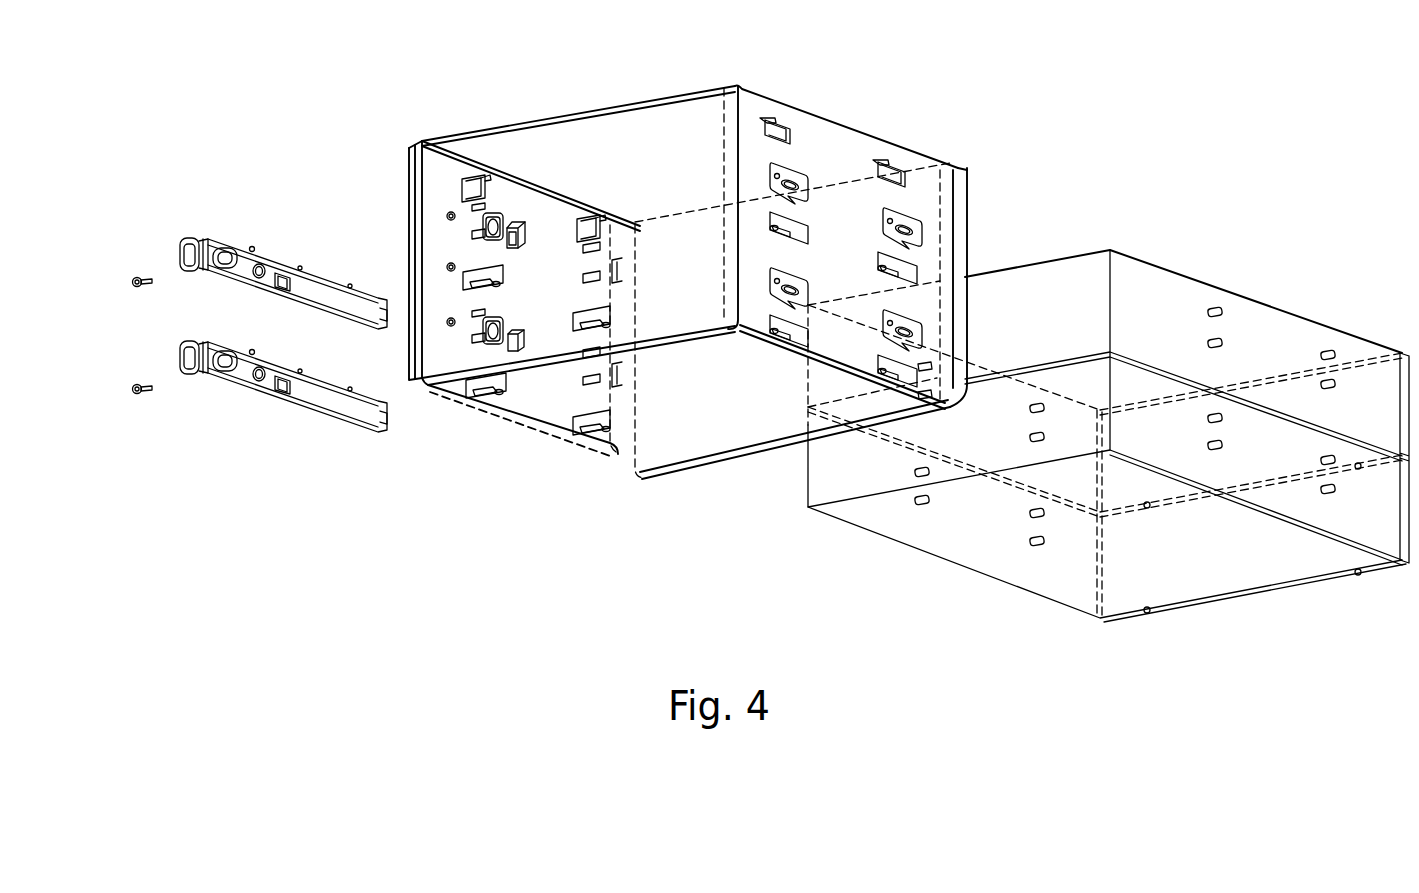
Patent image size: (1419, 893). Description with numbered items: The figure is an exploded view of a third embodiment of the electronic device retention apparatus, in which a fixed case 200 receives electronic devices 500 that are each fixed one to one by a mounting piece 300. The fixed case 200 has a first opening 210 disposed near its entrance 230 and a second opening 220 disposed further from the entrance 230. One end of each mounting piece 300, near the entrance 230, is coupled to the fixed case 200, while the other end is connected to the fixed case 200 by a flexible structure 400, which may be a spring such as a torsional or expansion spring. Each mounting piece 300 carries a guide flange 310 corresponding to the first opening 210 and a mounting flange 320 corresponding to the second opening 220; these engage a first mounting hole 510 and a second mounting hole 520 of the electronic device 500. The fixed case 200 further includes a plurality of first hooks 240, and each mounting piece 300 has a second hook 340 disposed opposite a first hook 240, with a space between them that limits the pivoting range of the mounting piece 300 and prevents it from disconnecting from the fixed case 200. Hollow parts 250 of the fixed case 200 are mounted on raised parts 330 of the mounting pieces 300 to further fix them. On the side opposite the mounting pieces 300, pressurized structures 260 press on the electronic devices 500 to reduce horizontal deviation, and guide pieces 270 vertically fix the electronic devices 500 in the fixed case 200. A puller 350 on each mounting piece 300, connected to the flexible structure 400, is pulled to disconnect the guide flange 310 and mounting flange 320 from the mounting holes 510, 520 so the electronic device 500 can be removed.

The fixed case 200 is at (664, 421).
The first opening 210 is at (580, 246).
The second opening 220 is at (472, 205).
The entrance 230 is at (848, 203).
The first hook 240 is at (516, 226).
The hollow part 250 is at (490, 242).
The pressurized structure 260 is at (792, 165).
The guide piece 270 is at (590, 216).
The mounting piece 300 is at (300, 408).
The guide flange 310 is at (359, 396).
The mounting flange 320 is at (253, 357).
The raised part 330 is at (257, 380).
The second hook 340 is at (283, 382).
The puller 350 is at (203, 372).
The flexible structure 400 is at (133, 397).
The electronic device 500 is at (980, 540).
The first mounting hole 510 is at (968, 353).
The second mounting hole 520 is at (1037, 406).